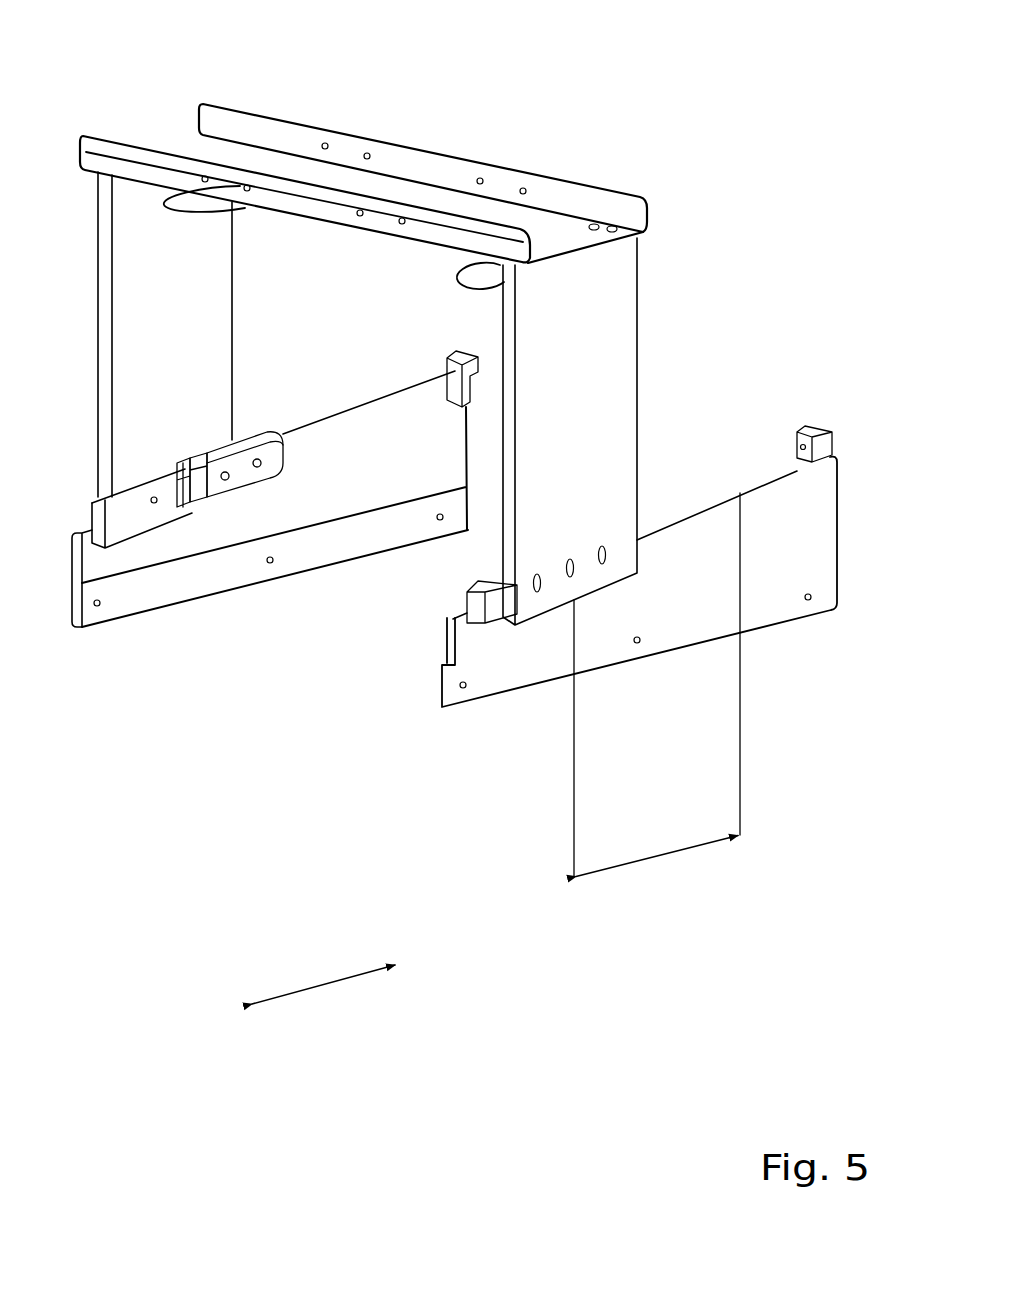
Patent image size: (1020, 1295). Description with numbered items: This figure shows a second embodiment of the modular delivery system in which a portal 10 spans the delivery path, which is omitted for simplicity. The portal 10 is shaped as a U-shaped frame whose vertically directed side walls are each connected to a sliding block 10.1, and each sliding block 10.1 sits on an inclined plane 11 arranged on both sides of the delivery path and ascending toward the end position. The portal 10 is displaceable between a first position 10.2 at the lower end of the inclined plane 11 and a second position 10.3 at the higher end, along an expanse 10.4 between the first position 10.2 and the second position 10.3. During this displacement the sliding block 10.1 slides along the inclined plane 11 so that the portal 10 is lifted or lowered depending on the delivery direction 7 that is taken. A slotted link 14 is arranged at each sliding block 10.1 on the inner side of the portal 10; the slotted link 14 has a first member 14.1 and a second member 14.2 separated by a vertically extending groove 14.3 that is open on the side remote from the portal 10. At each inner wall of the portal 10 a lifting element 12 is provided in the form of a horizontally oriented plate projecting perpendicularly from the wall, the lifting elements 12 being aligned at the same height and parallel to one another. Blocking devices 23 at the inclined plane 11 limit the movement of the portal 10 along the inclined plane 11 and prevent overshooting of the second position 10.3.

The delivery direction 7 is at (330, 983).
The portal 10 is at (578, 326).
The sliding block 10.1 is at (247, 433).
The first position 10.2 is at (574, 828).
The second position 10.3 is at (745, 835).
The expanse 10.4 is at (665, 854).
The inclined plane 11 is at (378, 432).
The lifting element 12 is at (170, 202).
The slotted link 14 is at (241, 640).
The first member 14.1 is at (184, 498).
The second member 14.2 is at (250, 480).
The groove 14.3 is at (203, 493).
The blocking device 23 is at (812, 428).